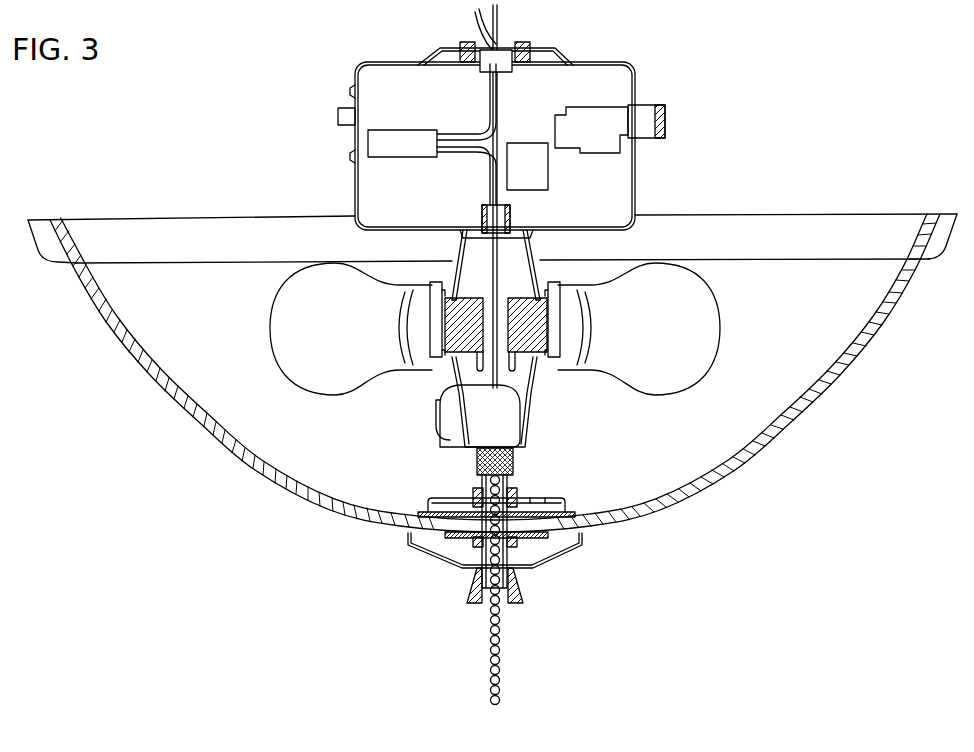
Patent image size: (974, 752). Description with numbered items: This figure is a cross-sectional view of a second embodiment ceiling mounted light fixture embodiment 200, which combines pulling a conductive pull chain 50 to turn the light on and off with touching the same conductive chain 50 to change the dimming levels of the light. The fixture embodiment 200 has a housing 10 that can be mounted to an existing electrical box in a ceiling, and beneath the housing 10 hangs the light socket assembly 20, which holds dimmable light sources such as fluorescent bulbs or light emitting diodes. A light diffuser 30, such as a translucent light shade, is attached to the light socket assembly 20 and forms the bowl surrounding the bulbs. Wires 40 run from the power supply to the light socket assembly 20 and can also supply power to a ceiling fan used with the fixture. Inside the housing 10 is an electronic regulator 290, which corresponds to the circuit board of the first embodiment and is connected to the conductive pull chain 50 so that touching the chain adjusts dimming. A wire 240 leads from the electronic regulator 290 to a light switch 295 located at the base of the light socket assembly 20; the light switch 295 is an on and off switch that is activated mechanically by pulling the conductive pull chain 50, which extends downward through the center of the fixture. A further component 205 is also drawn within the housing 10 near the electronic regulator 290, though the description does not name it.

The housing 10 is at (398, 62).
The light socket assembly 20 is at (452, 377).
The light diffuser 30 is at (238, 476).
The wires 40 is at (494, 107).
The conductive pull chain 50 is at (502, 643).
The ceiling mounted light fixture embodiment 200 is at (222, 128).
The circuit module 205 is at (533, 177).
The wire 240 is at (494, 173).
The electronic regulator 290 is at (397, 150).
The light switch 295 is at (463, 427).